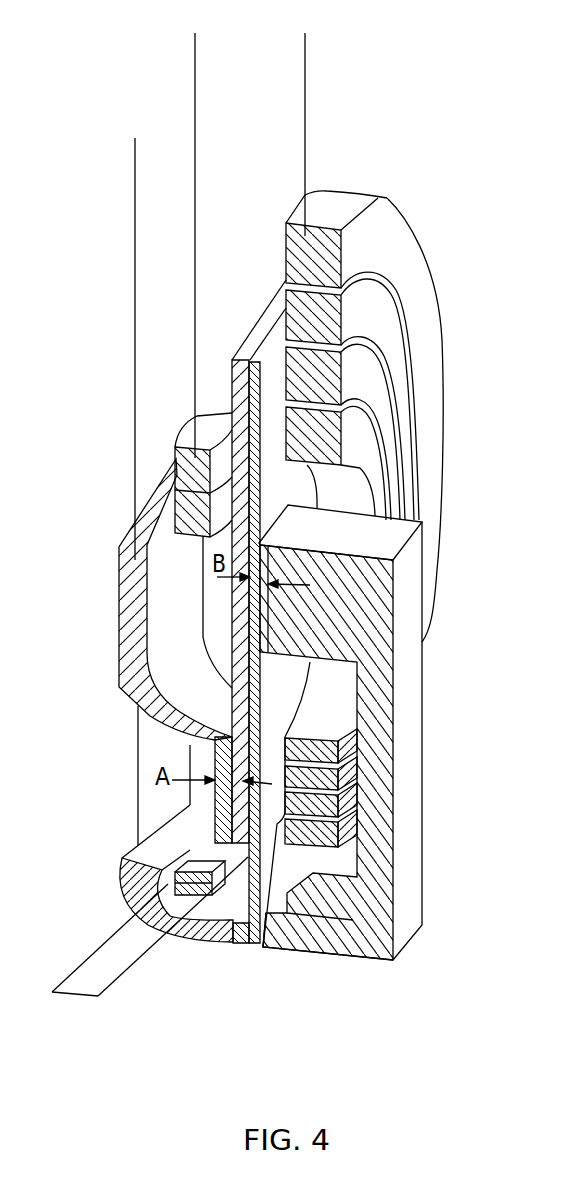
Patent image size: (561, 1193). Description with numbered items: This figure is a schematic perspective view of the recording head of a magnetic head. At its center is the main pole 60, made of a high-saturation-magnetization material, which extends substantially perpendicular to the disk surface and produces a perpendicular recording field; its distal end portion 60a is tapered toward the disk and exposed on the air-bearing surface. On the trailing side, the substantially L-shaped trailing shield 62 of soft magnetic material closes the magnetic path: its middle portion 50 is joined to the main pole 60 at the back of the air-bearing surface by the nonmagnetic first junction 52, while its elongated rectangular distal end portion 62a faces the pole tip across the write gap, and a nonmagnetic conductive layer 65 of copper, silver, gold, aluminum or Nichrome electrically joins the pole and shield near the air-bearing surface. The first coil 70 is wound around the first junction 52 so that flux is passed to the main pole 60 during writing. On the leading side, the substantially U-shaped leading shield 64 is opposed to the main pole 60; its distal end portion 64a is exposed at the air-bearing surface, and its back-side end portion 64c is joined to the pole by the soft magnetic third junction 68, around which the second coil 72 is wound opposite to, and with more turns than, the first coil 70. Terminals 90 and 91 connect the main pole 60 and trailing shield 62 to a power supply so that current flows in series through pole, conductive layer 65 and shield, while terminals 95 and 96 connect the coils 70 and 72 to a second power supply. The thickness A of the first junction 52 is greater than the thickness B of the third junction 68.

The middle portion 50 is at (197, 787).
The first junction 52 is at (215, 738).
The main pole 60 is at (238, 828).
The distal end portion 60a is at (243, 943).
The trailing shield 62 is at (119, 629).
The distal end portion 62a is at (163, 922).
The leading shield 64 is at (421, 759).
The distal end portion 64a is at (333, 953).
The end portion 64c is at (337, 580).
The nonmagnetic conductive layer 65 is at (235, 945).
The third junction 68 is at (262, 650).
The first coil 70 is at (182, 458).
The second coil 72 is at (428, 289).
The terminal 90 is at (257, 362).
The terminal 91 is at (130, 133).
The terminal 95 is at (190, 28).
The terminal 96 is at (310, 28).